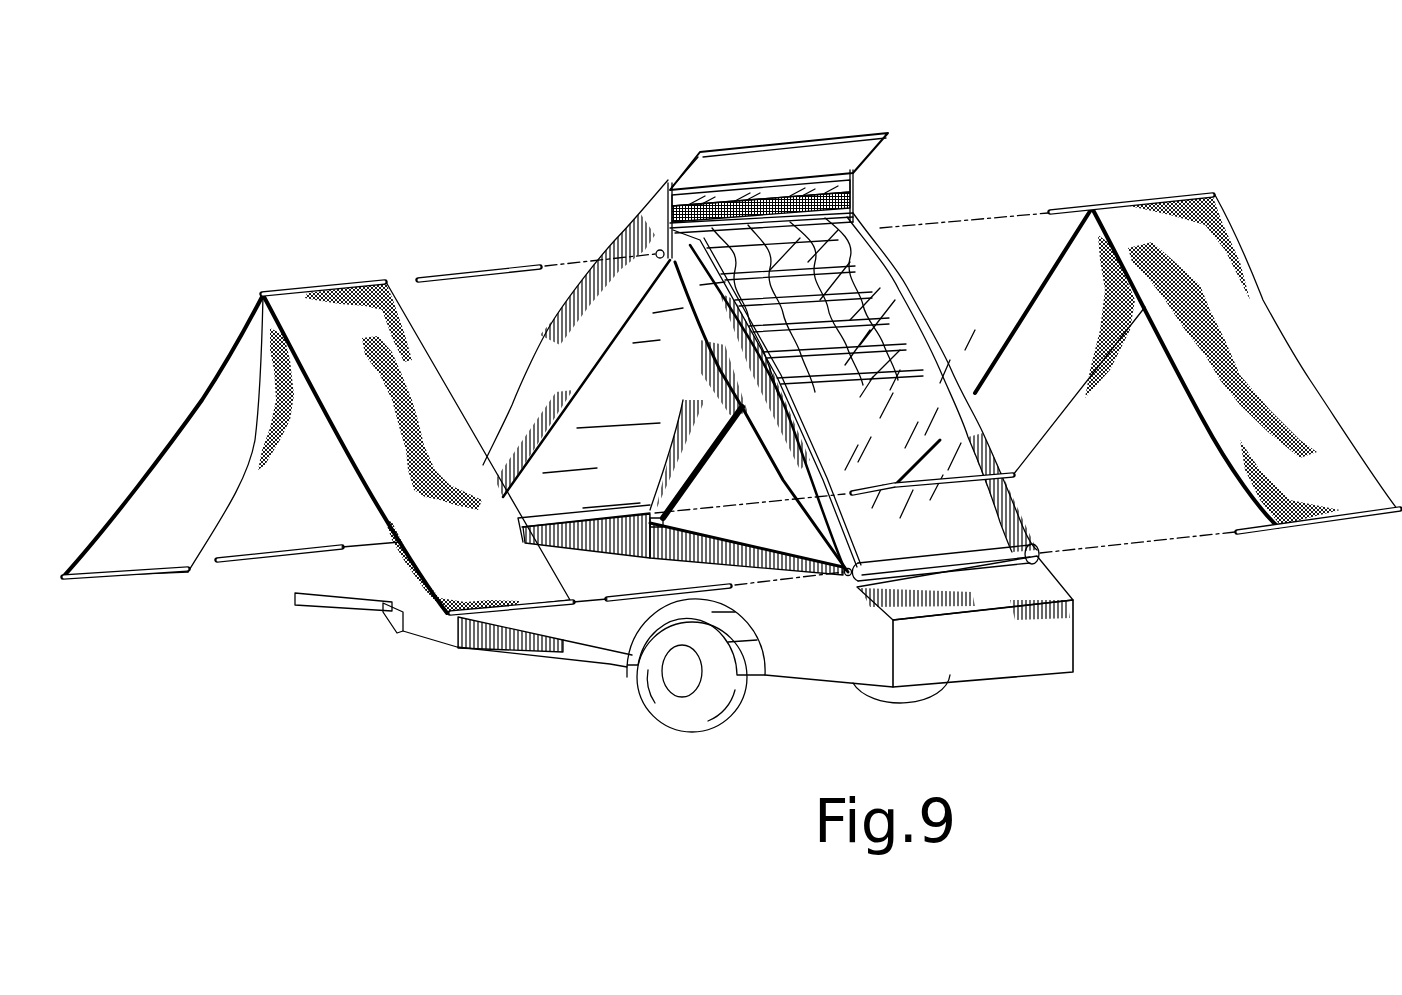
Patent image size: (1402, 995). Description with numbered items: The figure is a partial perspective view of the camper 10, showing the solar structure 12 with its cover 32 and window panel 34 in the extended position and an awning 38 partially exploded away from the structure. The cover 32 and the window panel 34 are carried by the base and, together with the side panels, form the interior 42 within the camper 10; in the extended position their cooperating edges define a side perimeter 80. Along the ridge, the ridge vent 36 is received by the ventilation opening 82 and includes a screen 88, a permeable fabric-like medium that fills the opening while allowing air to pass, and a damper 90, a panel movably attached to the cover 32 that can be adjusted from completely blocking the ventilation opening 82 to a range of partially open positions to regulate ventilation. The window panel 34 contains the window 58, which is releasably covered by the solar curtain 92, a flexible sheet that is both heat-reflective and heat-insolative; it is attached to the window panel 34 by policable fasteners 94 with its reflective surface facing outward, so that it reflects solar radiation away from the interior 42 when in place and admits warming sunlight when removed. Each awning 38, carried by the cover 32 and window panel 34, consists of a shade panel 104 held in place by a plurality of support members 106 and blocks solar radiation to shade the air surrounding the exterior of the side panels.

The camper 10 is at (590, 140).
The solar structure 12 is at (603, 211).
The cover 32 is at (530, 358).
The window panel 34 is at (965, 327).
The ridge vent 36 is at (871, 216).
The awning 38 is at (1139, 352).
The interior 42 is at (727, 501).
The window 58 is at (930, 430).
The side perimeter 80 is at (797, 550).
The ventilation opening 82 is at (872, 205).
The screen 88 is at (857, 202).
The damper 90 is at (857, 183).
The solar curtain 92 is at (890, 318).
The policable fastener 94 is at (933, 333).
The shade panel 104 is at (200, 402).
The support member 106 is at (463, 270).